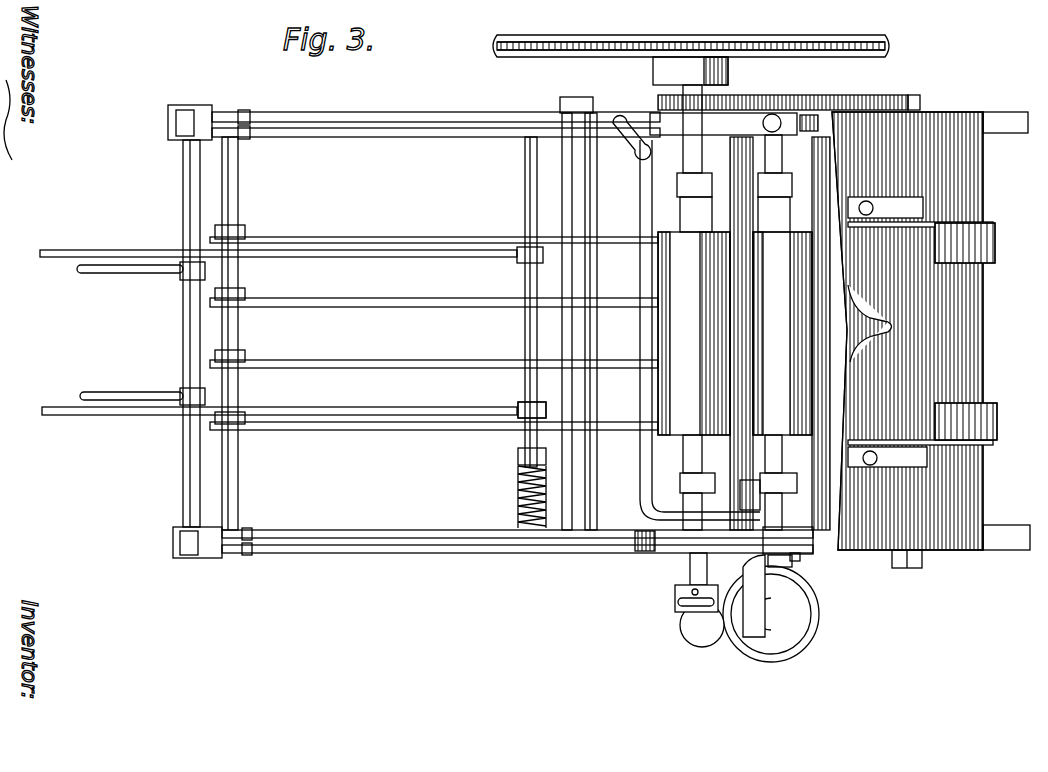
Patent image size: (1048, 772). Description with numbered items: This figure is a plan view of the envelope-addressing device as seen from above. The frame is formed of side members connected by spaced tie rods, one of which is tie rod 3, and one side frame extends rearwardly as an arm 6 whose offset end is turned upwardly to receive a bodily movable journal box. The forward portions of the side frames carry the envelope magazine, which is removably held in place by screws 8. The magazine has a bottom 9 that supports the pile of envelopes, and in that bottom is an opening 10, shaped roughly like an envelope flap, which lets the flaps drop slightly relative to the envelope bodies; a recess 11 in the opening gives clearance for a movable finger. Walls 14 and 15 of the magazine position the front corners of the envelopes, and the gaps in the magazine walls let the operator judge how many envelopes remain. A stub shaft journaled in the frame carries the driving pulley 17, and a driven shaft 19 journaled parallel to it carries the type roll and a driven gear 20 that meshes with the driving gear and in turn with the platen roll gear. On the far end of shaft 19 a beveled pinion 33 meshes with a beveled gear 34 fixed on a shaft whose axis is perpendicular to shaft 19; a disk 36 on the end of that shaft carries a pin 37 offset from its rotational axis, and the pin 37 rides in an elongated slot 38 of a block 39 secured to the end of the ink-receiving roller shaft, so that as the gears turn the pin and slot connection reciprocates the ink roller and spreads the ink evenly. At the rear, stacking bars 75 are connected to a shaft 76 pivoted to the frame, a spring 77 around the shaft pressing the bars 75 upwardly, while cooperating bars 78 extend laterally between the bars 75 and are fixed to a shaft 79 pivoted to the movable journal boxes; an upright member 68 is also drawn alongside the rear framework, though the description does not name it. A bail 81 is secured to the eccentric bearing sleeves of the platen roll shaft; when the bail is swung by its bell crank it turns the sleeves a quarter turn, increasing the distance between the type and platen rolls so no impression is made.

The tie rod 3 is at (590, 464).
The arm 6 is at (62, 332).
The screw 8 is at (874, 465).
The bottom 9 is at (985, 385).
The opening 10 is at (995, 332).
The recess 11 is at (885, 340).
The wall 14 is at (995, 245).
The wall 15 is at (968, 225).
The driving pulley 17 is at (612, 50).
The driven shaft 19 is at (795, 562).
The driven gear 20 is at (783, 90).
The beveled pinion 33 is at (800, 572).
The beveled gear 34 is at (818, 614).
The disk 36 is at (702, 630).
The pin 37 is at (685, 618).
The elongated slot 38 is at (678, 602).
The block 39 is at (683, 585).
The post 68 is at (237, 478).
The stacking bar 75 is at (386, 250).
The shaft 76 is at (525, 333).
The spring 77 is at (518, 490).
The bar 78 is at (145, 273).
The shaft 79 is at (183, 463).
The bail 81 is at (640, 480).